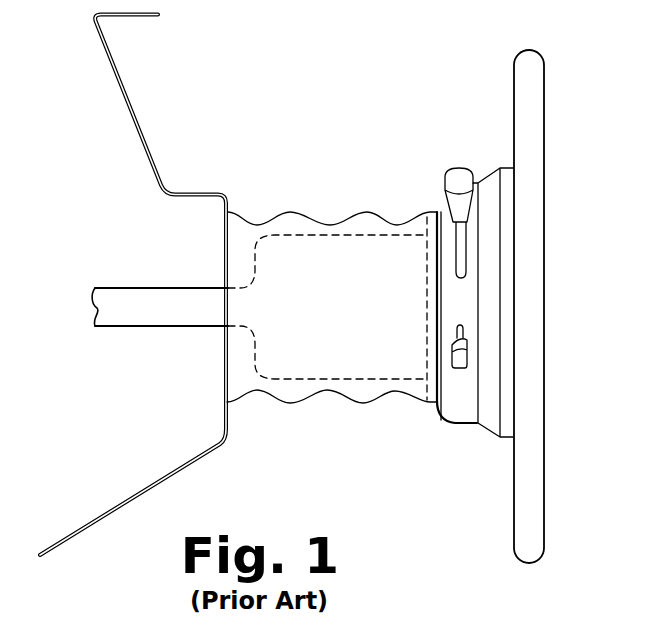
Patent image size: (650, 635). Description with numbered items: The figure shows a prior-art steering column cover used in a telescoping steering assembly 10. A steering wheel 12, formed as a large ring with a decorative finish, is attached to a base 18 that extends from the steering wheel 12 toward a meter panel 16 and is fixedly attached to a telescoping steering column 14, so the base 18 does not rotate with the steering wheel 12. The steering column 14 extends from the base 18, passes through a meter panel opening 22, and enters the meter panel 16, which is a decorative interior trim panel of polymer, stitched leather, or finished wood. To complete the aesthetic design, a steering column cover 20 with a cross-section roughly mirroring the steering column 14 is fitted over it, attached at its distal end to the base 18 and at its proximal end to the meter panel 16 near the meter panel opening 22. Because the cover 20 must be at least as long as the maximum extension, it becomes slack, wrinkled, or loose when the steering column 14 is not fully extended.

The telescoping steering assembly 10 is at (328, 102).
The steering wheel 12 is at (535, 111).
The telescoping steering column 14 is at (332, 313).
The meter panel 16 is at (127, 183).
The base 18 is at (440, 212).
The steering column cover 20 is at (345, 400).
The meter panel opening 22 is at (232, 363).